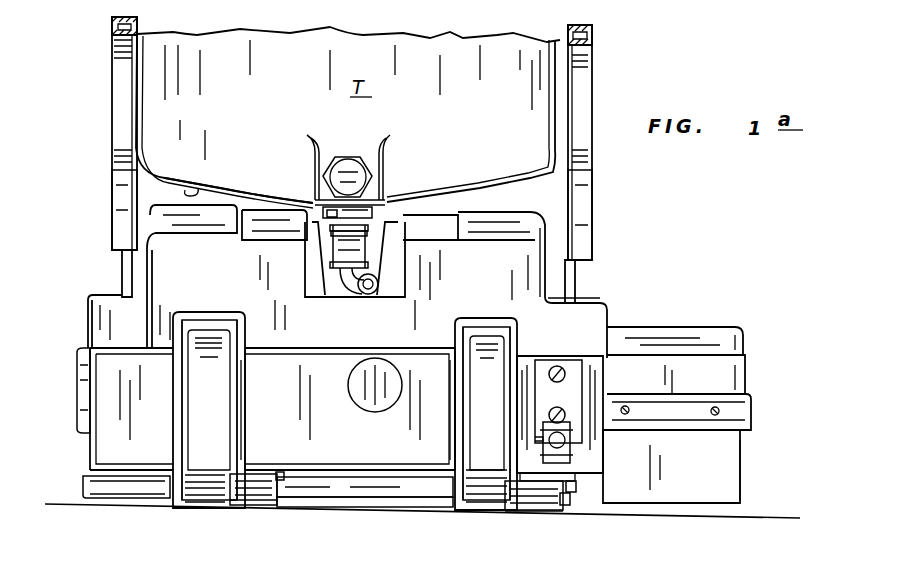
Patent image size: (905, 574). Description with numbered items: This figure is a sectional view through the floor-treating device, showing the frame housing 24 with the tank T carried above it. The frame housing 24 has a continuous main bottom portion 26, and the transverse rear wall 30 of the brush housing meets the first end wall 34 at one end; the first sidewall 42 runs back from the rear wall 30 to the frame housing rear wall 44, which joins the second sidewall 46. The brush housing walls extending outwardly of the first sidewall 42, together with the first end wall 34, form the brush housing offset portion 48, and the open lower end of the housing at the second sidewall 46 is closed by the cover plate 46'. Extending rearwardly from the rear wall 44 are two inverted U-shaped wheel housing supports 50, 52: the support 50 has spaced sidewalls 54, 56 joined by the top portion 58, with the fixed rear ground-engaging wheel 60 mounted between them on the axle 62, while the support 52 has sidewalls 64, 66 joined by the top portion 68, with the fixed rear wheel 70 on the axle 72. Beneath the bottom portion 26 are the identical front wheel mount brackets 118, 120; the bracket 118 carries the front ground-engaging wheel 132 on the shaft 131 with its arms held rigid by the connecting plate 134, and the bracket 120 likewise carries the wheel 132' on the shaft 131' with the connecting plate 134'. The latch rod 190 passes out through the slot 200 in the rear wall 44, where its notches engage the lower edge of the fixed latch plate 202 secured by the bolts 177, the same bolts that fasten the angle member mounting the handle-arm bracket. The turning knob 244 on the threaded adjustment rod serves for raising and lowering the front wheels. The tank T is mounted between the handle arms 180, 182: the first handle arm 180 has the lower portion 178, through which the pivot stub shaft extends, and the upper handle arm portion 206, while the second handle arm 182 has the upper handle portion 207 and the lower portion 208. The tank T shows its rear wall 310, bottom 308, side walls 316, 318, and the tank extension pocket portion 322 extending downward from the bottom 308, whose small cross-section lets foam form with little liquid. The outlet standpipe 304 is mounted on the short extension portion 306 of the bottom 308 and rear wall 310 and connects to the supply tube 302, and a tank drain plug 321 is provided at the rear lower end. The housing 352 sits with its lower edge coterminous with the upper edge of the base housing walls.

The rear wall 310 is at (284, 57).
The side wall 318 is at (135, 57).
The second handle arm 182 is at (110, 88).
The upper handle portion 207 is at (115, 189).
The lower portion 208 is at (122, 275).
The side wall 316 is at (572, 58).
The first handle arm 180 is at (578, 97).
The upper handle arm portion 206 is at (582, 198).
The lower portion of handle arm 178 is at (571, 279).
The bottom 308 is at (218, 170).
The tank drain plug 321 is at (350, 168).
The short extension portion 306 is at (374, 210).
The housing 352 is at (480, 220).
The outlet standpipe 304 is at (335, 222).
The tank extension pocket portion 322 is at (340, 233).
The supply tube 302 is at (377, 296).
The frame housing rear wall 44 is at (272, 409).
The turning knob 244 is at (363, 400).
The second sidewall 46 is at (63, 391).
The cover plate 46' is at (119, 510).
The wheel housing support 52 is at (204, 312).
The top portion 68 is at (227, 321).
The sidewall 64 is at (243, 336).
The sidewall 66 is at (178, 338).
The fixed rear wheel 70 is at (201, 508).
The axle 72 is at (247, 431).
The frame housing 24 is at (355, 481).
The main bottom portion 26 is at (403, 498).
The transverse rear wall 30 is at (722, 473).
The front wheel mount bracket 120 is at (270, 506).
The connecting plate 134' is at (250, 511).
The front ground-engaging wheel 132' is at (238, 532).
The shaft 131' is at (303, 457).
The wheel housing support 50 is at (491, 317).
The top portion 58 is at (470, 314).
The sidewall 56 is at (456, 340).
The sidewall 54 is at (522, 350).
The fixed rear ground-engaging wheel 60 is at (478, 512).
The axle 62 is at (452, 427).
The fixed latch plate 202 is at (540, 395).
The bolts 177 is at (566, 405).
The slot 200 is at (543, 450).
The latch rod 190 is at (554, 450).
The shaft 131 is at (604, 485).
The front ground-engaging wheel 132 is at (547, 525).
The connecting plate 134 is at (588, 521).
The front wheel mount bracket 118 is at (516, 517).
The first sidewall 42 is at (606, 449).
The brush housing offset portion 48 is at (752, 471).
The first end wall 34 is at (742, 495).